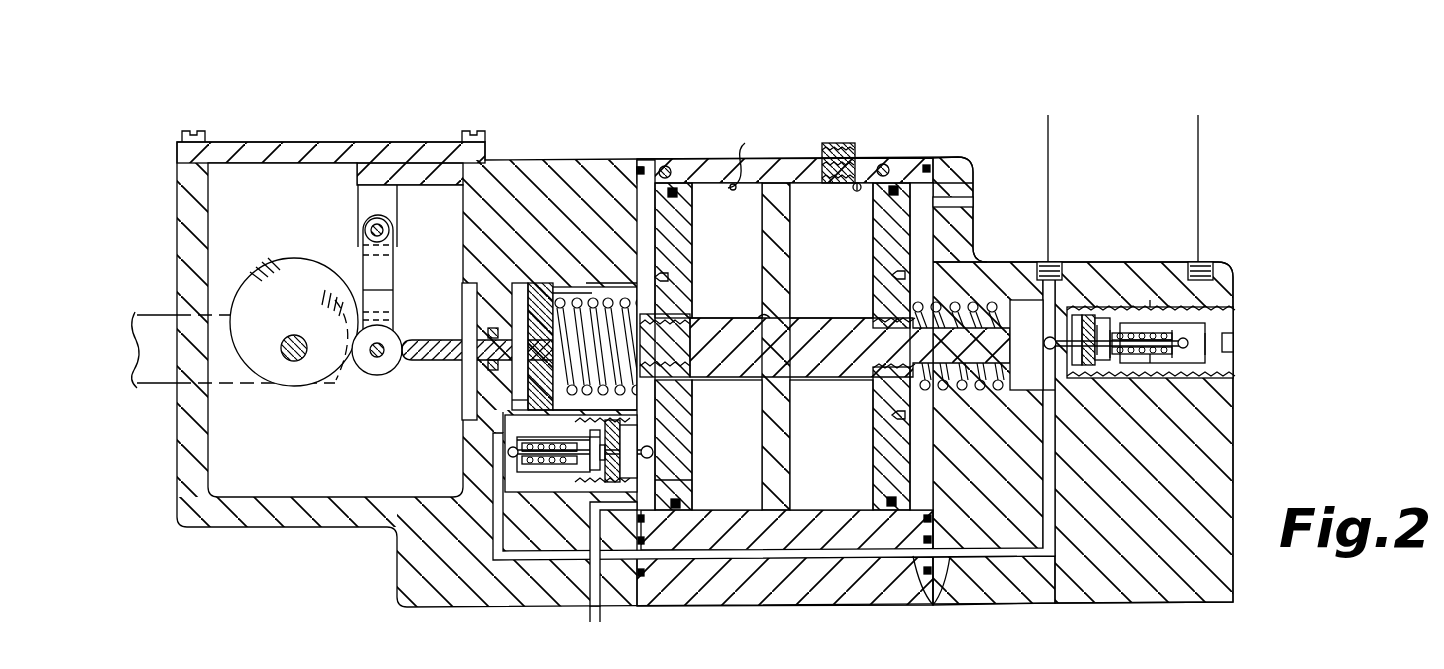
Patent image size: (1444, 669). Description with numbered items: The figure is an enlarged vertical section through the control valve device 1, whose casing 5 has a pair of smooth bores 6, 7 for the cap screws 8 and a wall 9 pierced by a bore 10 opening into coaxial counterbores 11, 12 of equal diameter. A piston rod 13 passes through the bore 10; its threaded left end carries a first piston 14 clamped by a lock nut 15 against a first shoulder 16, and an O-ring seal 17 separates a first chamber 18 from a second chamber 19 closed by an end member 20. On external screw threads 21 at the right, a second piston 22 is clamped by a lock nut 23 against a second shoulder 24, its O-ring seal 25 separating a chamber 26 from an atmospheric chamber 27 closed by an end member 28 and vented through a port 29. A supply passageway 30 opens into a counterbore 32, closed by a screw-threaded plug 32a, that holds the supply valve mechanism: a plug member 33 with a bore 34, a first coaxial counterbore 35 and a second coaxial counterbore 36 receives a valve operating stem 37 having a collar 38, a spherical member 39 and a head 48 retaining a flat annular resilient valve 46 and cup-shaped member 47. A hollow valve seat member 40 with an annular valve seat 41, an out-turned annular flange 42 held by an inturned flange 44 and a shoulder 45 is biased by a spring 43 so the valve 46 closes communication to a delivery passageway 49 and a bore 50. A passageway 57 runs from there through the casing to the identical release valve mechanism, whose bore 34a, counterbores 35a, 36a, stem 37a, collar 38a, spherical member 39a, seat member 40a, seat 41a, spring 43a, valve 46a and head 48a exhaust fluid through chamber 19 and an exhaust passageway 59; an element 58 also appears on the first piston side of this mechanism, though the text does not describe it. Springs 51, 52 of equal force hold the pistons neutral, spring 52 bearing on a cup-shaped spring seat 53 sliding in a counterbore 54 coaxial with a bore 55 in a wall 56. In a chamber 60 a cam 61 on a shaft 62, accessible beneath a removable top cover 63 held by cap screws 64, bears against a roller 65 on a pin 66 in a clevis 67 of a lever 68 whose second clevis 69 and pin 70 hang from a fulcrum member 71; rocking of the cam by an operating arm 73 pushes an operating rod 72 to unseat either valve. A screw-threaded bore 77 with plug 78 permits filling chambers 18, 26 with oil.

The control valve device 1 is at (727, 138).
The casing 5 is at (773, 175).
The smooth bore 6 is at (662, 167).
The smooth bore 7 is at (884, 164).
The cap screw 8 is at (668, 166).
The wall 9 is at (770, 268).
The bore 10 is at (765, 317).
The counterbore 11 is at (746, 160).
The counterbore 12 is at (857, 183).
The piston rod 13 is at (812, 330).
The first piston 14 is at (680, 243).
The lock nut 15 is at (655, 318).
The first shoulder 16 is at (688, 393).
The O-ring seal 17 is at (680, 500).
The first chamber 18 is at (748, 478).
The second chamber 19 is at (645, 230).
The end member 20 is at (560, 172).
The external screw threads 21 is at (921, 308).
The second piston 22 is at (880, 247).
The lock nut 23 is at (878, 398).
The second shoulder 24 is at (880, 384).
The O-ring seal 25 is at (880, 500).
The chamber 26 is at (806, 478).
The atmospheric chamber 27 is at (923, 192).
The end member 28 is at (958, 236).
The port 29 is at (963, 203).
The supply passageway 30 is at (1202, 268).
The counterbore 32 is at (1228, 314).
The screw-threaded plug 32a is at (1228, 375).
The plug member 33 is at (1046, 396).
The bore 34 is at (1100, 318).
The bore 34a is at (600, 447).
The first coaxial counterbore 35 is at (1077, 316).
The first coaxial counterbore 35a is at (630, 440).
The second coaxial counterbore 36 is at (1088, 366).
The second coaxial counterbore 36a is at (612, 480).
The valve operating stem 37 is at (1150, 302).
The valve operating stem 37a is at (503, 433).
The collar 38 is at (1100, 362).
The collar 38a is at (595, 450).
The spherical member 39 is at (1048, 350).
The spherical member 39a is at (653, 452).
The hollow valve seat member 40 is at (1170, 323).
The hollow valve seat member 40a is at (530, 435).
The annular valve seat 41 is at (1167, 364).
The annular valve seat 41a is at (580, 470).
The out-turned annular flange 42 is at (1112, 366).
The spring 43 is at (1138, 364).
The spring 43a is at (530, 460).
The inturned flange 44 is at (1135, 330).
The shoulder 45 is at (1150, 366).
The flat annular resilient valve 46 is at (1189, 346).
The flat annular resilient valve 46a is at (513, 458).
The annular metallic cup-shaped member 47 is at (1195, 368).
The head 48 is at (1233, 340).
The head 48a is at (517, 450).
The delivery passageway 49 is at (1052, 268).
The bore 50 is at (1012, 326).
The spring 51 is at (962, 392).
The spring 52 is at (600, 298).
The cup-shaped spring seat 53 is at (534, 290).
The counterbore 54 is at (512, 402).
The bore 55 is at (488, 333).
The wall 56 is at (470, 300).
The passageway 57 is at (497, 492).
The piston shoulder 58 is at (665, 480).
The exhaust passageway 59 is at (595, 612).
The chamber 60 is at (215, 190).
The cam 61 is at (285, 272).
The shaft 62 is at (294, 362).
The removable top cover 63 is at (182, 156).
The cap screw 64 is at (193, 136).
The roller 65 is at (372, 358).
The pin 66 is at (380, 365).
The clevis 67 is at (393, 320).
The lever 68 is at (393, 272).
The second clevis 69 is at (384, 230).
The pin 70 is at (365, 230).
The fulcrum member 71 is at (368, 195).
The operating rod 72 is at (430, 360).
The operating arm 73 is at (148, 322).
The screw-threaded bore 77 is at (828, 185).
The screw-threaded plug 78 is at (835, 143).